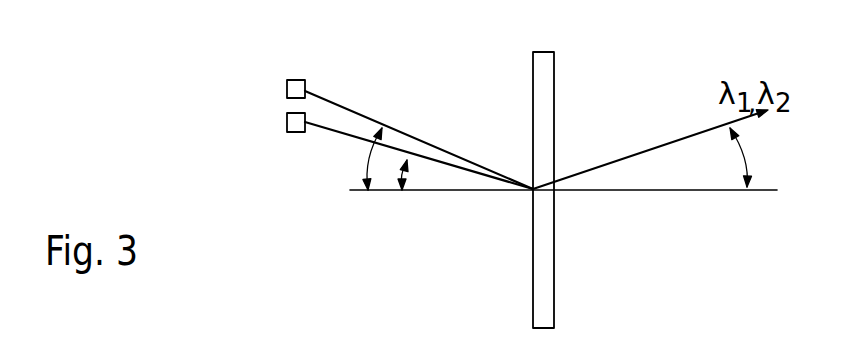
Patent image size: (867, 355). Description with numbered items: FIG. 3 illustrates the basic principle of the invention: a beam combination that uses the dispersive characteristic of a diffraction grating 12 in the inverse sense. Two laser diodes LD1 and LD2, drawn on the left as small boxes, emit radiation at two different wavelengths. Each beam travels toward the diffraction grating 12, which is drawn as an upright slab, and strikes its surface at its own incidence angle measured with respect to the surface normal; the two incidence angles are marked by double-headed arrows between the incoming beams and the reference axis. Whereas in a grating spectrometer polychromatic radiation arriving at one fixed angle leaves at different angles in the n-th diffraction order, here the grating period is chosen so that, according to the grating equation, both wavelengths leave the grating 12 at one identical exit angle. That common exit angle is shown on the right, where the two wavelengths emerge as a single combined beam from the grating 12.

The diffraction grating 12 is at (547, 297).
The first laser diode LD1 is at (292, 133).
The second laser diode LD2 is at (293, 80).